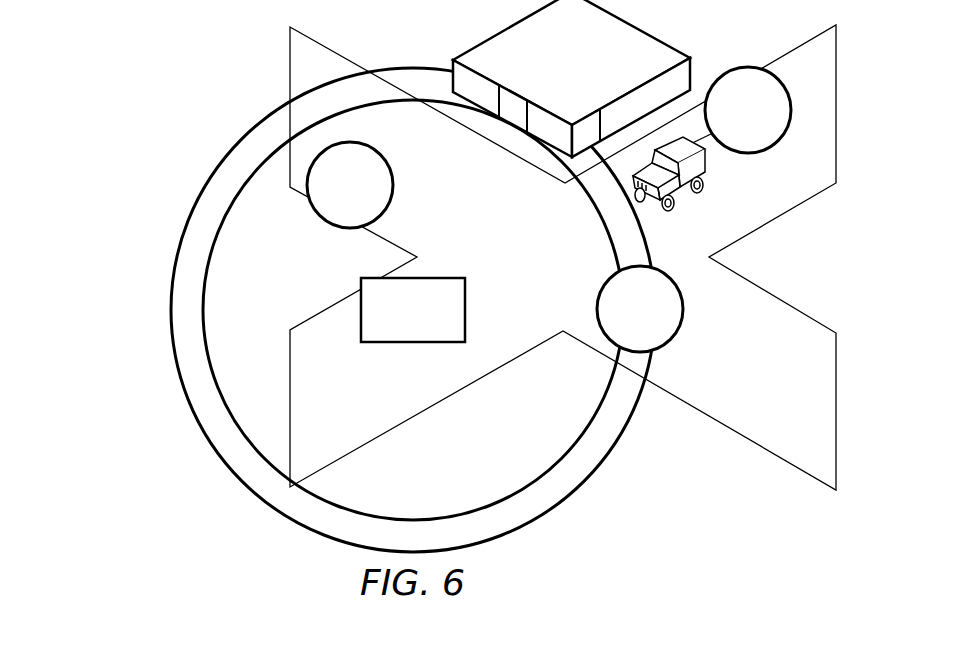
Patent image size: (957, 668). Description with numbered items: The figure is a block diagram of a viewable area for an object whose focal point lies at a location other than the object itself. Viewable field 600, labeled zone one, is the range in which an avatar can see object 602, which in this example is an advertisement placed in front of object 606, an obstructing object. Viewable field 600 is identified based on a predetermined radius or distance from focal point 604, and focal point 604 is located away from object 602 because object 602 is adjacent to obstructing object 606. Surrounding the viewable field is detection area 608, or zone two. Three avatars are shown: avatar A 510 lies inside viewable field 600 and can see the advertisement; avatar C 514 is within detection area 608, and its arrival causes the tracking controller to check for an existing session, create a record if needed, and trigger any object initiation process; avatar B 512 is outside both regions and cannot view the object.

The viewable field 600 is at (500, 489).
The object 602 is at (512, 93).
The focal point 604 is at (467, 305).
The object 606 is at (630, 65).
The detection area 608 is at (213, 415).
The avatar A 510 is at (393, 183).
The avatar B 512 is at (750, 68).
The avatar C 514 is at (683, 312).